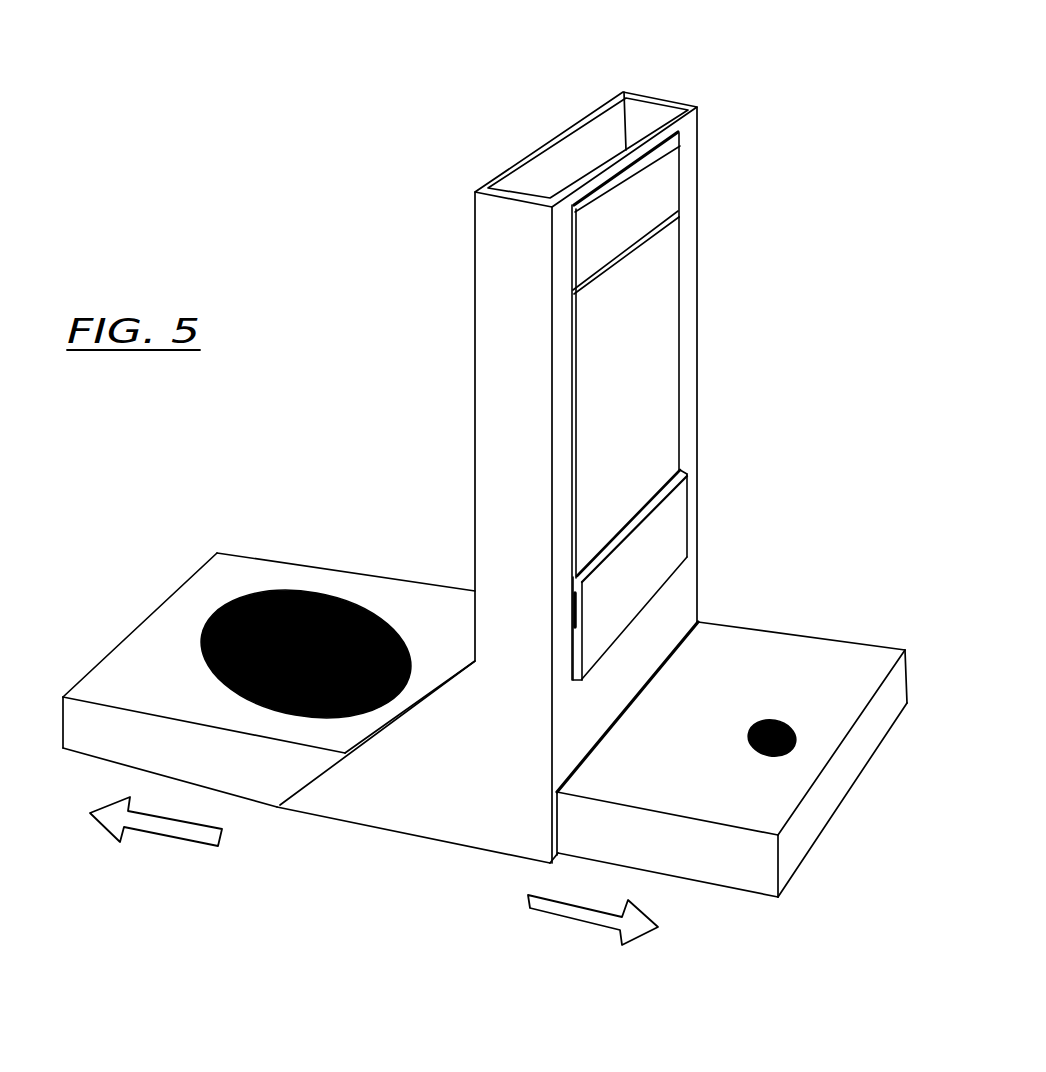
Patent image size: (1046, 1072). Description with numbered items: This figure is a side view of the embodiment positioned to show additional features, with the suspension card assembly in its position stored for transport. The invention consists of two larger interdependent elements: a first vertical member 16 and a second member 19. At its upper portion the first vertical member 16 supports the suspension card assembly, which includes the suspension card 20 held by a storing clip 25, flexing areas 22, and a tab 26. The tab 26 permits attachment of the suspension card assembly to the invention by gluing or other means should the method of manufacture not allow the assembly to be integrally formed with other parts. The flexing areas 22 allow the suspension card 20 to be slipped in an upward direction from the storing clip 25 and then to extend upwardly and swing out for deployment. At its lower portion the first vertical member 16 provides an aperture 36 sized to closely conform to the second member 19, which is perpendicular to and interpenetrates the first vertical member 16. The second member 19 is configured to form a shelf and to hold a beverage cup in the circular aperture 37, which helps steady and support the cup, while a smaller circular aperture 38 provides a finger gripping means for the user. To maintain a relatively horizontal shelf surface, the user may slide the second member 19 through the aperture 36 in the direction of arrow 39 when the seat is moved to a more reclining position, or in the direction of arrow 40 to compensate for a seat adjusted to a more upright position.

The first vertical member 16 is at (512, 375).
The second member 19 is at (443, 610).
The suspension card 20 is at (637, 440).
The flexing areas 22 is at (677, 212).
The storing clip 25 is at (677, 552).
The tab 26 is at (679, 134).
The aperture 36 is at (643, 692).
The circular aperture 37 is at (210, 617).
The smaller circular aperture 38 is at (797, 733).
The arrow 39 is at (569, 916).
The arrow 40 is at (185, 827).